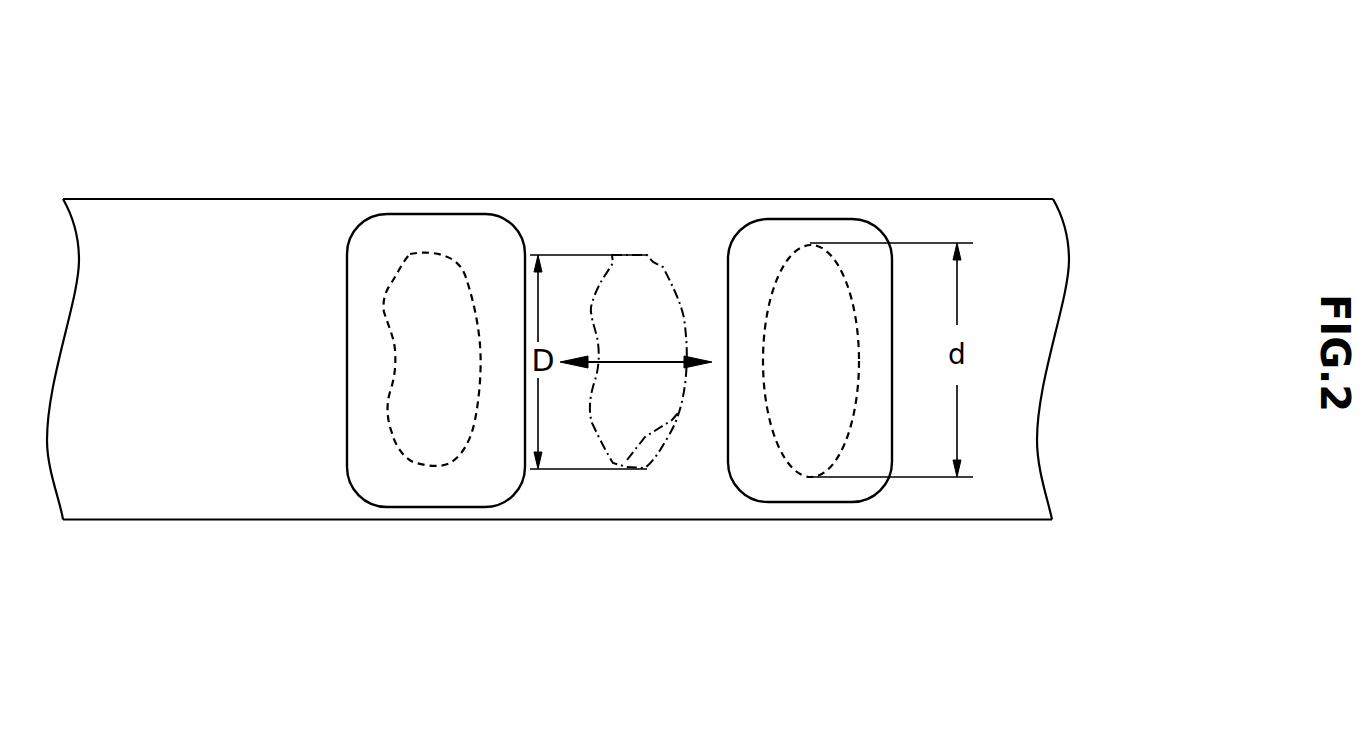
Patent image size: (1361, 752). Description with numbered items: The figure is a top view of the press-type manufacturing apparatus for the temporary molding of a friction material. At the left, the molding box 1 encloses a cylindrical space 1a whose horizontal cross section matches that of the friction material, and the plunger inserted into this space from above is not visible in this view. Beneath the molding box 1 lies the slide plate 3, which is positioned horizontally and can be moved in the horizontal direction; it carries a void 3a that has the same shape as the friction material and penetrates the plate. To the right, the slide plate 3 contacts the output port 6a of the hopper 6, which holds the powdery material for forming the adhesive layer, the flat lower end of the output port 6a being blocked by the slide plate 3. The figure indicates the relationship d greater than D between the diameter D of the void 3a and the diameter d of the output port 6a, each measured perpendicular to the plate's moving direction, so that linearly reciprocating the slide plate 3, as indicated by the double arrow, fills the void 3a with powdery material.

The molding box 1 is at (452, 214).
The cylindrical space 1a is at (473, 365).
The slide plate 3 is at (870, 520).
The void 3a is at (622, 473).
The hopper 6 is at (847, 219).
The output port 6a is at (853, 317).